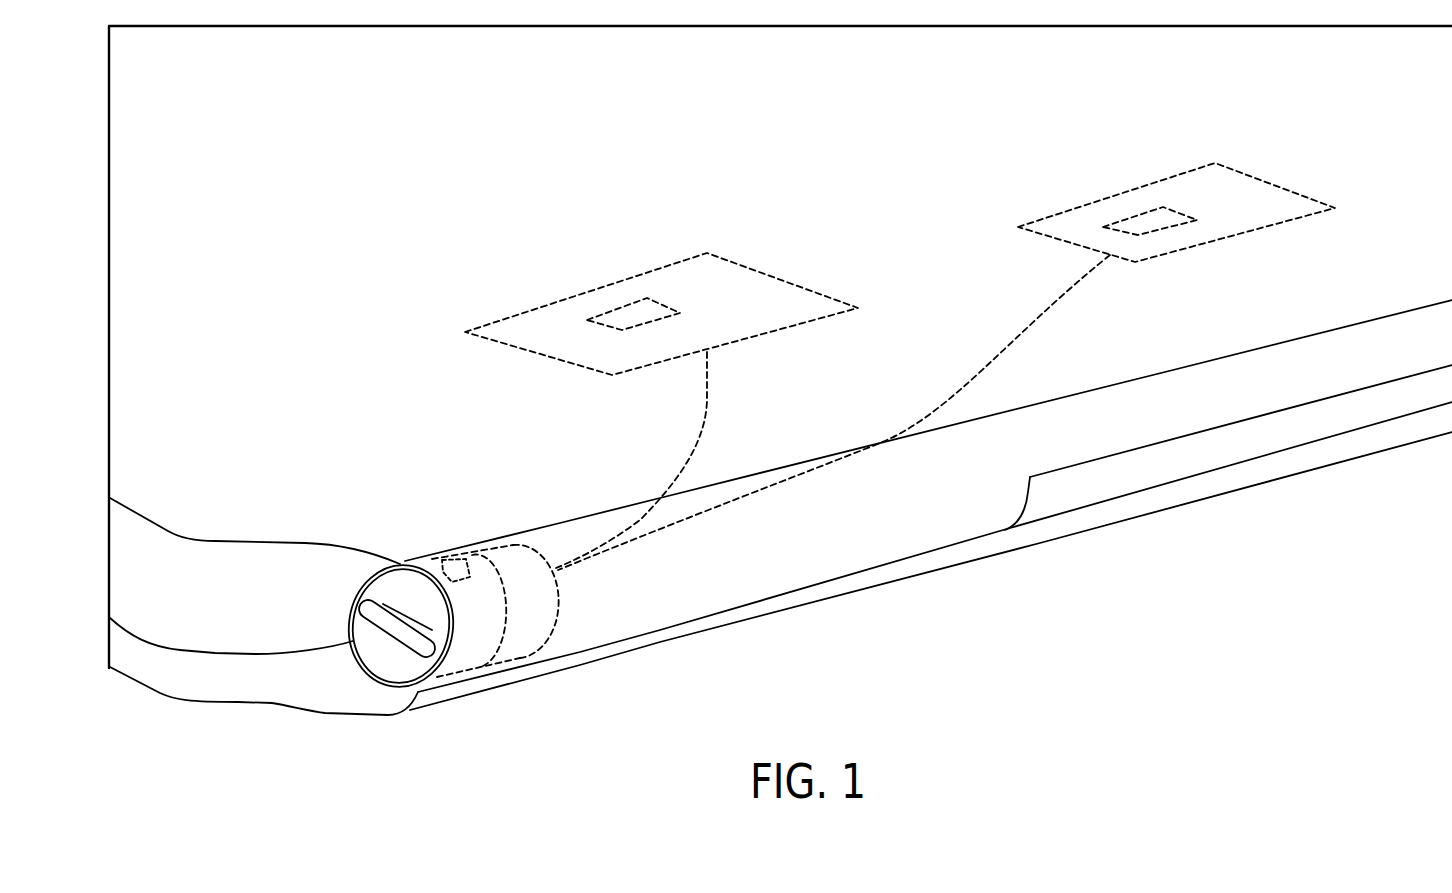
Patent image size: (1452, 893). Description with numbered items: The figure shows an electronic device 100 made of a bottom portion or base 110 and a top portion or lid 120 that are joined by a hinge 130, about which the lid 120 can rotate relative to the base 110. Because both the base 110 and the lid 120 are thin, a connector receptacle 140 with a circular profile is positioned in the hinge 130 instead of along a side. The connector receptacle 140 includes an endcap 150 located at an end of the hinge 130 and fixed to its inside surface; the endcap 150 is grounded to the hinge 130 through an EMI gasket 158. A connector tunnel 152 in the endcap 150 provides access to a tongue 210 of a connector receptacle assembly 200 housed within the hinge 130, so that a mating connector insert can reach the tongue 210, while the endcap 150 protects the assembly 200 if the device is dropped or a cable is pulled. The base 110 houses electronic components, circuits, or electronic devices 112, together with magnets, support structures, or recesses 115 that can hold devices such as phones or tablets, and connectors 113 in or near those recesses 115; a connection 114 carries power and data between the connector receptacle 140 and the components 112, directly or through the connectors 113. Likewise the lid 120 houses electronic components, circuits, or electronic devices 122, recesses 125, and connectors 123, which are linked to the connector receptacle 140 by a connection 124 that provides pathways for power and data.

The electronic device 100 is at (1133, 645).
The base 110 is at (205, 683).
The electronic components, circuits, or electronic devices 112 is at (1153, 182).
The connectors 113 is at (1110, 254).
The connection 114 is at (1078, 297).
The magnets, support structures, or recesses 115 is at (1117, 220).
The lid 120 is at (1158, 337).
The electronic components, circuits, or electronic devices 122 is at (667, 268).
The connectors 123 is at (707, 352).
The connection 124 is at (703, 415).
The magnets, support structures, or recesses 125 is at (607, 312).
The hinge 130 is at (939, 520).
The connector receptacle 140 is at (382, 655).
The endcap 150 is at (472, 627).
The connector tunnel 152 is at (410, 638).
The EMI gasket 158 is at (453, 557).
The connector receptacle assembly 200 is at (532, 592).
The tongue 210 is at (390, 606).